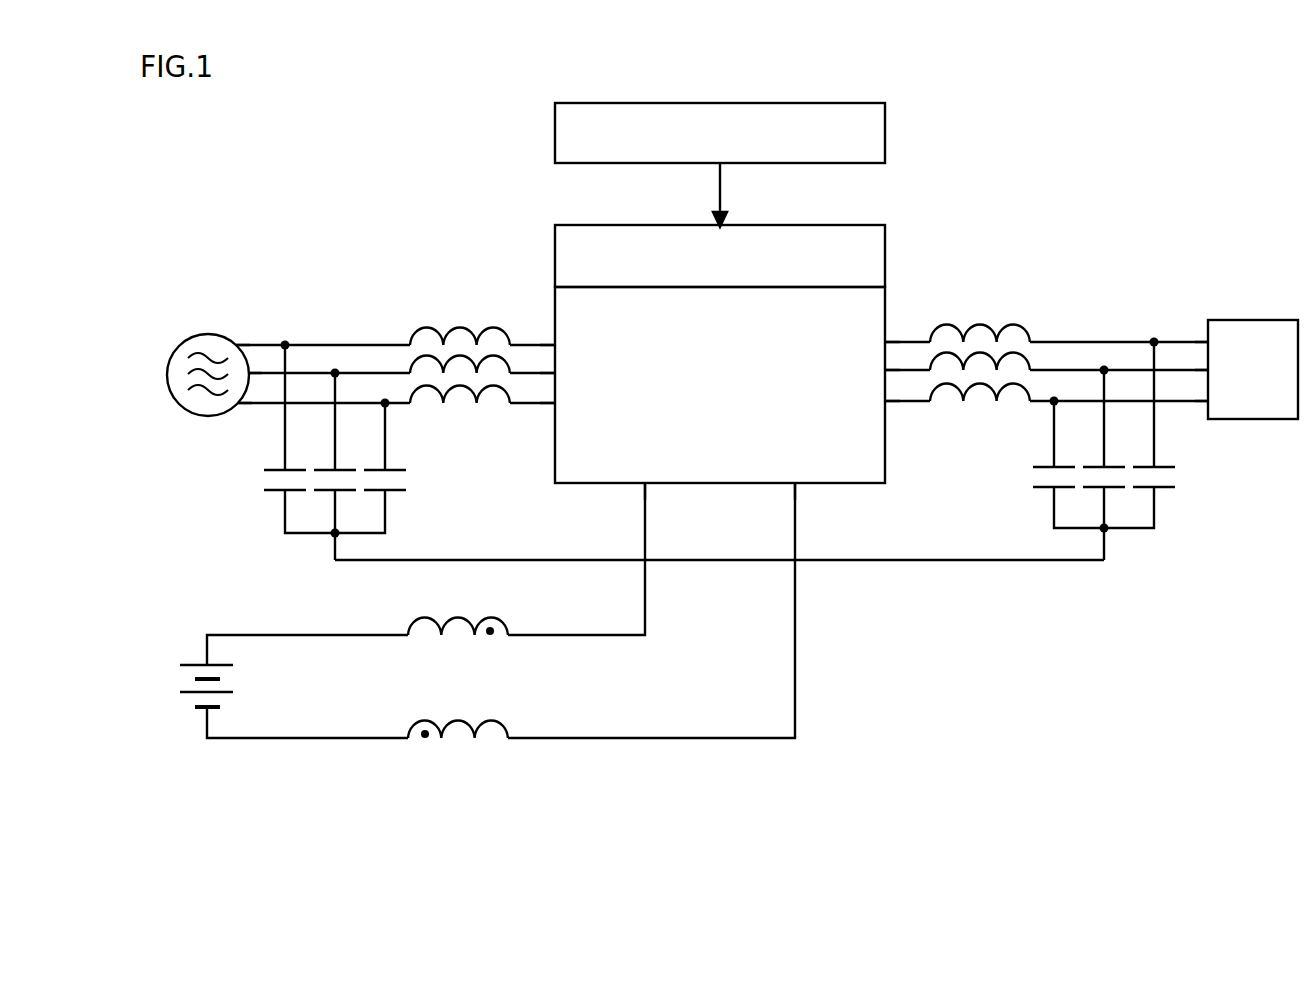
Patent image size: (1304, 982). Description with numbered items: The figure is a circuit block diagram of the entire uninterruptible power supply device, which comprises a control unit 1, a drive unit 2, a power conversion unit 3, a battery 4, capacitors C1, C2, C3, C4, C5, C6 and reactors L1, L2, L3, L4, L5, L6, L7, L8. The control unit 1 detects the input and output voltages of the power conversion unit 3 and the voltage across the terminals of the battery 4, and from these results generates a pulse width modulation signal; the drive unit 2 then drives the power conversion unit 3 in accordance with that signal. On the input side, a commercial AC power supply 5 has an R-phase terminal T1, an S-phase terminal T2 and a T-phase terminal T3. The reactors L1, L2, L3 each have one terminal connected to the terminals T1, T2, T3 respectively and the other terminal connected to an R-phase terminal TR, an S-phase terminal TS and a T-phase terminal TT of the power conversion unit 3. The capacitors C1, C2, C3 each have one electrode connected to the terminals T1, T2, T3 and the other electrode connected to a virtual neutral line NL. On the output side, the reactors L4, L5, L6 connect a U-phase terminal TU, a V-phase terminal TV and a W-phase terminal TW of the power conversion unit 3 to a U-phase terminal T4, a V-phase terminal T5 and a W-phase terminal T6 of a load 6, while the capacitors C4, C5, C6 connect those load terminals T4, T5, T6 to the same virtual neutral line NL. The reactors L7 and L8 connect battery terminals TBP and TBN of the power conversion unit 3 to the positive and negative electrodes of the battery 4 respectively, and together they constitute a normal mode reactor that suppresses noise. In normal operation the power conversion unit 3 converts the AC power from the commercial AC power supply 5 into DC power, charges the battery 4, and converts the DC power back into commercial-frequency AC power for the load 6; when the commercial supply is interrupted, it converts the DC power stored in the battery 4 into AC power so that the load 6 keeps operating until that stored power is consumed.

The control unit 1 is at (555, 133).
The drive unit 2 is at (555, 257).
The power conversion unit 3 is at (555, 308).
The battery 4 is at (193, 665).
The commercial AC power supply 5 is at (209, 333).
The load 6 is at (1252, 319).
The R-phase terminal T1 is at (238, 343).
The S-phase terminal T2 is at (252, 371).
The T-phase terminal T3 is at (235, 405).
The U-phase terminal T4 is at (1207, 341).
The V-phase terminal T5 is at (1208, 369).
The W-phase terminal T6 is at (1208, 401).
The R-phase terminal TR is at (552, 344).
The S-phase terminal TS is at (553, 373).
The T-phase terminal TT is at (554, 403).
The U-phase terminal TU is at (886, 341).
The V-phase terminal TV is at (886, 371).
The W-phase terminal TW is at (886, 402).
The battery terminal TBP is at (642, 485).
The battery terminal TBN is at (797, 485).
The reactor L1 is at (462, 323).
The reactor L2 is at (427, 351).
The reactor L3 is at (460, 398).
The reactor L4 is at (946, 320).
The reactor L5 is at (979, 348).
The reactor L6 is at (982, 394).
The reactor L7 is at (498, 613).
The reactor L8 is at (498, 716).
The capacitor C1 is at (297, 467).
The capacitor C2 is at (347, 467).
The capacitor C3 is at (397, 467).
The capacitor C4 is at (1142, 467).
The capacitor C5 is at (1091, 467).
The capacitor C6 is at (1043, 467).
The virtual neutral line NL is at (960, 562).